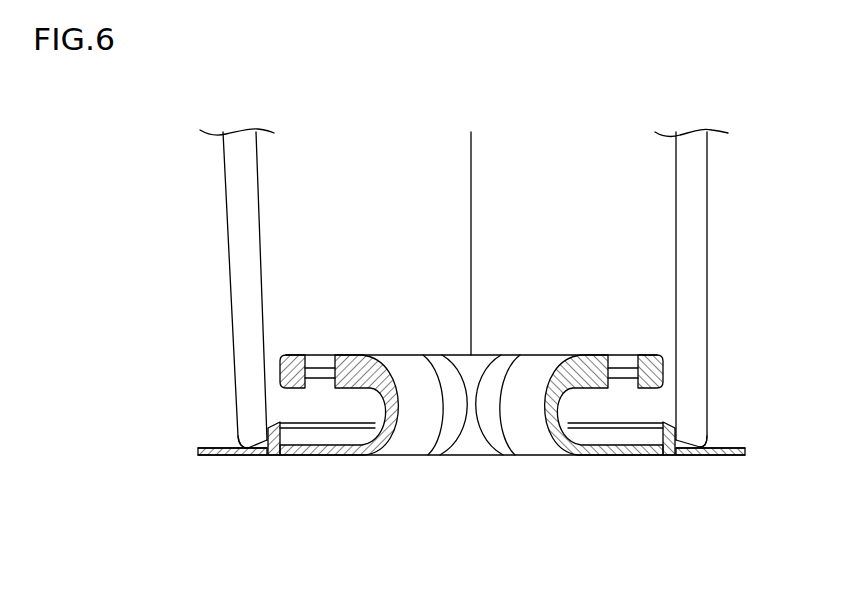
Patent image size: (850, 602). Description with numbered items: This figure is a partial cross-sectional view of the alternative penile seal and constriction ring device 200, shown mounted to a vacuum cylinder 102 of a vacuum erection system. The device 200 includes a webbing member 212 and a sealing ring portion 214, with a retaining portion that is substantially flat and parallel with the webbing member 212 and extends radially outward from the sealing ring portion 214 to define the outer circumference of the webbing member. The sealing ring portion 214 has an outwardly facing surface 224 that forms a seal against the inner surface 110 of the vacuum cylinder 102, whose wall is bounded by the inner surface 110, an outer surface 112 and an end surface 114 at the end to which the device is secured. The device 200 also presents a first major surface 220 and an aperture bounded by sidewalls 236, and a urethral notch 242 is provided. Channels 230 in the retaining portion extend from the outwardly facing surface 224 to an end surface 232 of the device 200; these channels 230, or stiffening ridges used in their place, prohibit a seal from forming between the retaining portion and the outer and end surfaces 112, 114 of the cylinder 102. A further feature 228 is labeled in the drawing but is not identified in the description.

The vacuum cylinder 102 is at (693, 293).
The inner surface 110 is at (260, 225).
The outer surface 112 is at (229, 241).
The end surface 114 is at (249, 440).
The device 200 is at (379, 476).
The webbing member 212 is at (622, 450).
The sealing ring portion 214 is at (273, 430).
The first major surface 220 is at (610, 443).
The outwardly facing surface 224 is at (266, 443).
The slot 228 is at (310, 357).
The channels 230 is at (213, 448).
The end surface 232 is at (198, 450).
The sidewalls 236 is at (407, 364).
The urethral notch 242 is at (462, 360).